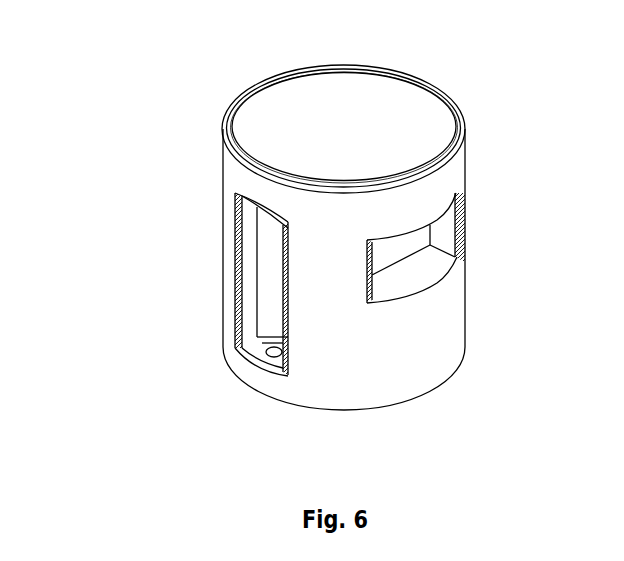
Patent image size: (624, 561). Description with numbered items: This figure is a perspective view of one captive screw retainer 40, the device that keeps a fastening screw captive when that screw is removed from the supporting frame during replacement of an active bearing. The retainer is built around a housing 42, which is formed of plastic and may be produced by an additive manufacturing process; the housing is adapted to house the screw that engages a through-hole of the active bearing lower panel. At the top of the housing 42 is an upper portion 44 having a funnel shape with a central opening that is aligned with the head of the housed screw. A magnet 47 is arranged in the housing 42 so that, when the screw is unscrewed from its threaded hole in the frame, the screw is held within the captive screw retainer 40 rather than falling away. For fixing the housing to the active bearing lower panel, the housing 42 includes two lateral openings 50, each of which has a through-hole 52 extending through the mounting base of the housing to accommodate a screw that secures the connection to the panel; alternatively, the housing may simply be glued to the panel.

The captive screw retainer 40 is at (130, 85).
The housing 42 is at (241, 178).
The upper portion 44 is at (290, 94).
The magnet 47 is at (397, 248).
The lateral opening 50 is at (252, 316).
The through-hole 52 is at (277, 350).